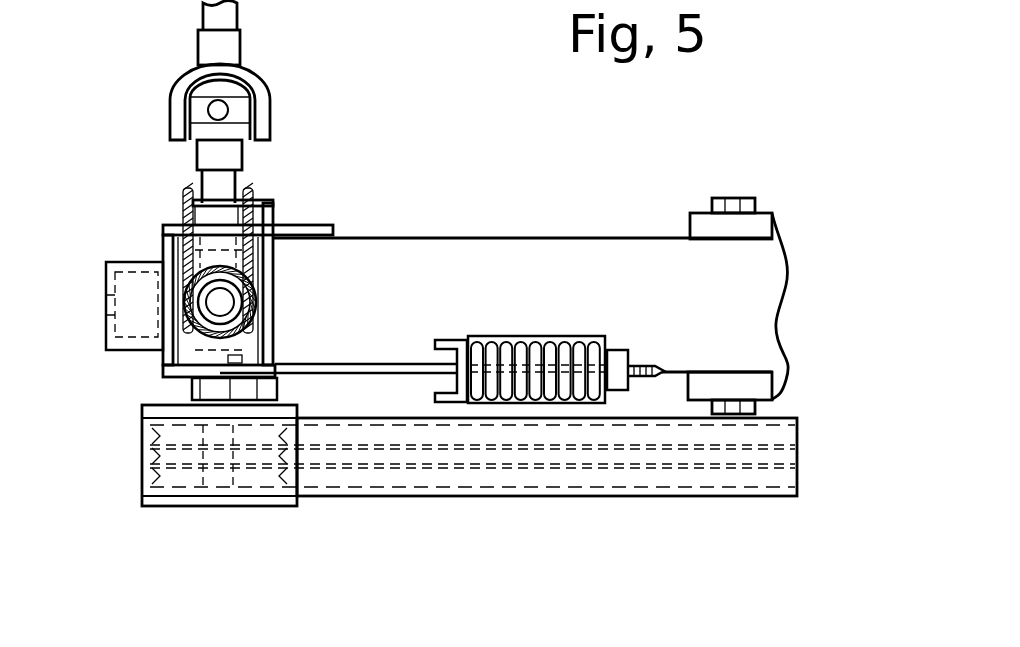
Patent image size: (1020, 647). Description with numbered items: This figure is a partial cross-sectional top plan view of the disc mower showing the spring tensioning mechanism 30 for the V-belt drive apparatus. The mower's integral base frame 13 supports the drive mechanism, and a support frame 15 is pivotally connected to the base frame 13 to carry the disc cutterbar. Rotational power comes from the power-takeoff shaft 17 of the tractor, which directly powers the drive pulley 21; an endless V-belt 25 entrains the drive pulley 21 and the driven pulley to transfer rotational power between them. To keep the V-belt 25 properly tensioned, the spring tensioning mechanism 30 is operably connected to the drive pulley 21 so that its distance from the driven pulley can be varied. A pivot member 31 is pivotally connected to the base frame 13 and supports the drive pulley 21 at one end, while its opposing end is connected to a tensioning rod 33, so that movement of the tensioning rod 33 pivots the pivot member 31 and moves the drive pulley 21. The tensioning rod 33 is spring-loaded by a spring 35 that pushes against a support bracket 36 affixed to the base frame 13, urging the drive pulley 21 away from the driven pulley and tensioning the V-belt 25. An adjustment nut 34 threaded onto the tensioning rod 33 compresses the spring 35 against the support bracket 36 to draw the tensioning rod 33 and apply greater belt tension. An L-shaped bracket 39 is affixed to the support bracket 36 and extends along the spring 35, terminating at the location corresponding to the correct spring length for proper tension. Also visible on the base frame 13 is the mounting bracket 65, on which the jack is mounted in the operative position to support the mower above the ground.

The base frame 13 is at (185, 338).
The support frame 15 is at (560, 262).
The power-takeoff shaft 17 is at (237, 14).
The drive pulley 21 is at (258, 507).
The V-belt 25 is at (673, 494).
The spring tensioning mechanism 30 is at (612, 293).
The pivot member 31 is at (258, 390).
The tensioning rod 33 is at (397, 373).
The adjustment nut 34 is at (627, 353).
The spring 35 is at (540, 400).
The support bracket 36 is at (443, 340).
The L-shaped bracket 39 is at (500, 337).
The mounting bracket 65 is at (125, 307).